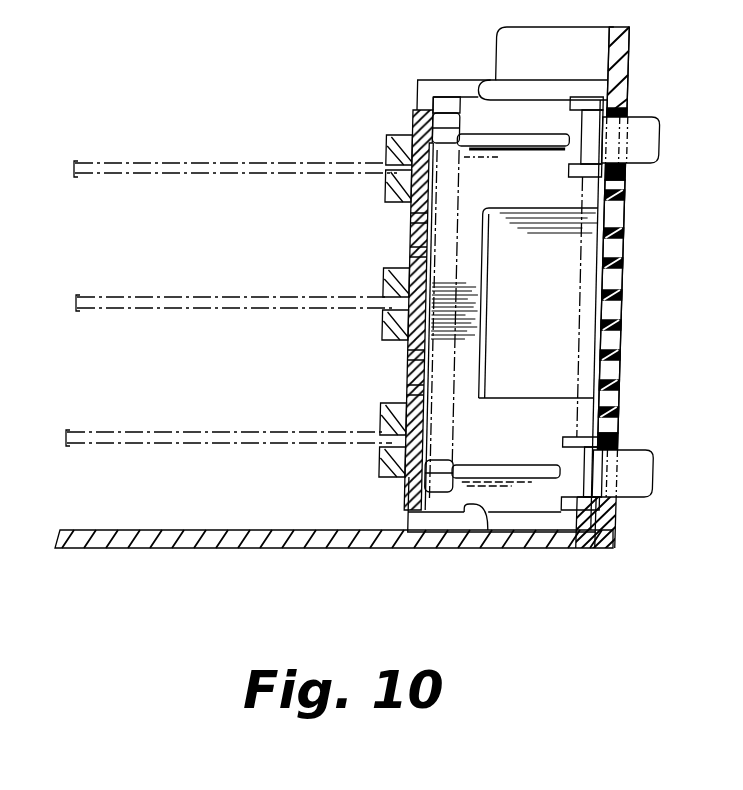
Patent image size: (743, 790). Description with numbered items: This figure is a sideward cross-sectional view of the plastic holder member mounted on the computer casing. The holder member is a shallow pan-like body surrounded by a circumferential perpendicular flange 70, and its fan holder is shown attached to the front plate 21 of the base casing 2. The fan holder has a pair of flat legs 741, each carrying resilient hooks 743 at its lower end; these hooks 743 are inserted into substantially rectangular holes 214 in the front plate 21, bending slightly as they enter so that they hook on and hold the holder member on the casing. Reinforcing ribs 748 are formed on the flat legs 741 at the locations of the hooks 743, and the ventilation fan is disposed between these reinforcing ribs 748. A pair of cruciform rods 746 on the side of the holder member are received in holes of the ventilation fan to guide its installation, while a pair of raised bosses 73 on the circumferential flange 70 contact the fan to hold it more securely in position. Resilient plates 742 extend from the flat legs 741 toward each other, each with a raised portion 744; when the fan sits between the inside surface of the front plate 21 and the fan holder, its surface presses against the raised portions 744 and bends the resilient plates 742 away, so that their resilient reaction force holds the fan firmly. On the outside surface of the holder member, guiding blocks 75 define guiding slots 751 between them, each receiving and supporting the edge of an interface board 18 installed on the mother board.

The base casing 2 is at (572, 547).
The interface board 18 is at (185, 166).
The front plate 21 is at (622, 63).
The circumferential perpendicular flange 70 is at (449, 81).
The raised boss 73 is at (478, 99).
The guiding block 75 is at (390, 140).
The hole 214 is at (623, 163).
The flat leg 741 is at (470, 358).
The resilient plate 742 is at (428, 232).
The hook 743 is at (650, 143).
The raised portion 744 is at (440, 232).
The cruciform rod 746 is at (464, 152).
The reinforcing rib 748 is at (489, 468).
The guiding slot 751 is at (395, 167).